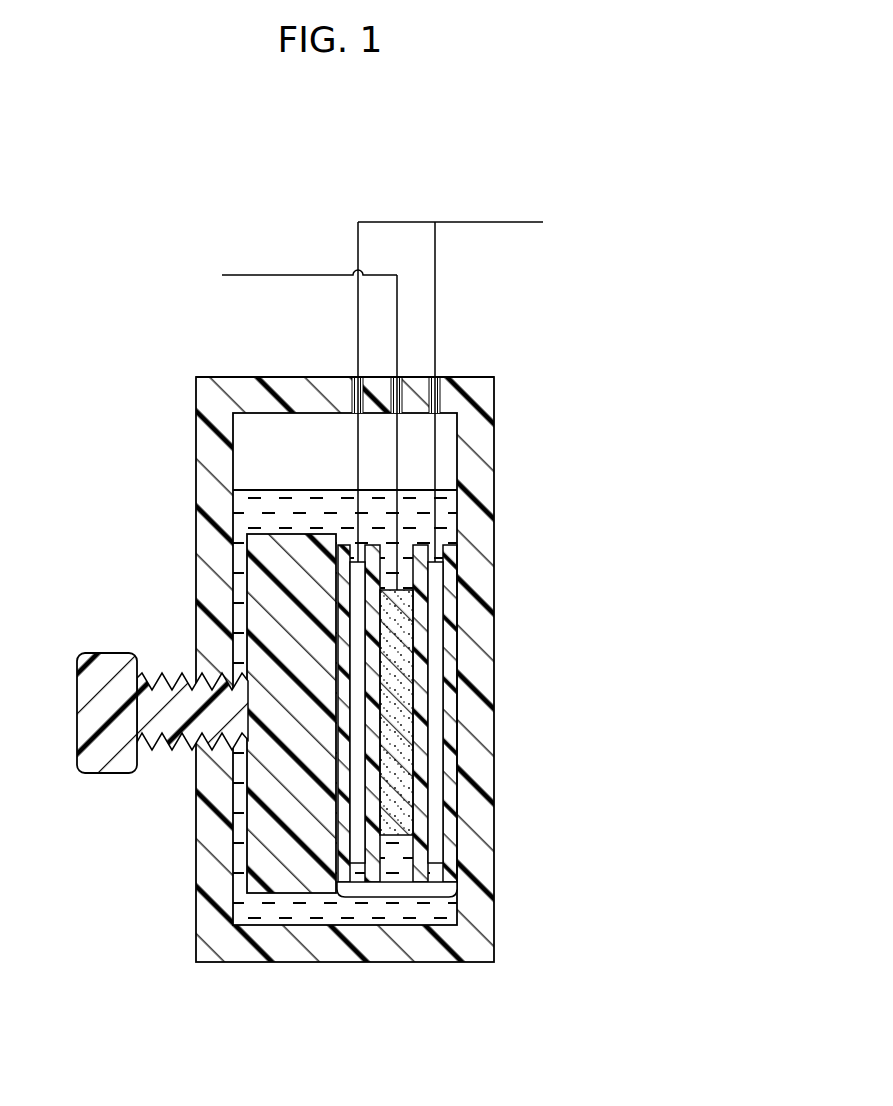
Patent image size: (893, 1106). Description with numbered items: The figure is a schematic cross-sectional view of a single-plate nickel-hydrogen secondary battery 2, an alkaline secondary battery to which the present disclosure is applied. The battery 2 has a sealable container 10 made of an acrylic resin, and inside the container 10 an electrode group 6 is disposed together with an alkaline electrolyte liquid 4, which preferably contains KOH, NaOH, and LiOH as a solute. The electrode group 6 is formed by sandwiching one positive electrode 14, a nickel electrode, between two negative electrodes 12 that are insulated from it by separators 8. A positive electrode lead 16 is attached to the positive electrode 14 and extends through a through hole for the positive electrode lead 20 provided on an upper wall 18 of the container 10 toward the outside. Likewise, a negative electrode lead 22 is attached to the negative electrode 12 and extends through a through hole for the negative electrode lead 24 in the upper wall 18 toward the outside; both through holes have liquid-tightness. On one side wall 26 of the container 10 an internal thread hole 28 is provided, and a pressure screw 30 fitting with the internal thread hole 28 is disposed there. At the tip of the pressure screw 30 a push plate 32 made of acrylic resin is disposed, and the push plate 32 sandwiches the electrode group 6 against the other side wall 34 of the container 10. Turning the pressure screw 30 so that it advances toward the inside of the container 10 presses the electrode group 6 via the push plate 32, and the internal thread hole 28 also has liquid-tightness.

The nickel-hydrogen secondary battery 2 is at (533, 353).
The alkaline electrolyte liquid 4 is at (273, 502).
The electrode group 6 is at (398, 897).
The separators 8 is at (418, 607).
The container 10 is at (495, 440).
The negative electrodes 12 is at (362, 683).
The positive electrode 14 is at (400, 795).
The positive electrode lead 16 is at (277, 270).
The upper wall 18 is at (287, 387).
The through hole for the positive electrode lead 20 is at (398, 377).
The negative electrode lead 22 is at (508, 220).
The through hole for the negative electrode lead 24 is at (360, 377).
The side wall 26 is at (215, 840).
The internal thread hole 28 is at (210, 690).
The pressure screw 30 is at (77, 697).
The push plate 32 is at (297, 862).
The other side wall 34 is at (478, 857).